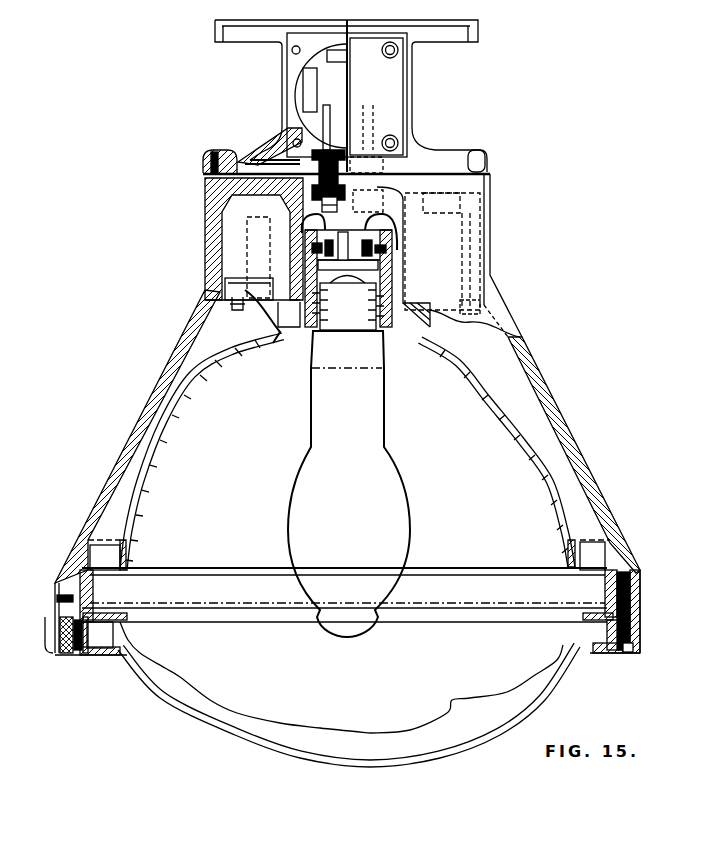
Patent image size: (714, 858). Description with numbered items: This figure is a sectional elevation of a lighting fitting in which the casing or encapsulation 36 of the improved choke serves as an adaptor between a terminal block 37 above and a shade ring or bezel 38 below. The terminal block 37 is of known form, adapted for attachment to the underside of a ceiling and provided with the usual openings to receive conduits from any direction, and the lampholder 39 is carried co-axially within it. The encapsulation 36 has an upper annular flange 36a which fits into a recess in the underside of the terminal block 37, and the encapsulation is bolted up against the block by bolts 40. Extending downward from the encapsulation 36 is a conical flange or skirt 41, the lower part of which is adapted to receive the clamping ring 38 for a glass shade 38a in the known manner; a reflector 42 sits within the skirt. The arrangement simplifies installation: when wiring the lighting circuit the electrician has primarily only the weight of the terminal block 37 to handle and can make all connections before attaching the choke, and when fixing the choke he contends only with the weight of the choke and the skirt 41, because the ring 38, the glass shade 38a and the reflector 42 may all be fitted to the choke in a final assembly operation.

The casing or encapsulation 36 is at (490, 250).
The upper annular flange 36a is at (267, 147).
The terminal block 37 is at (417, 110).
The shade ring or bezel 38 is at (640, 637).
The glass shade 38a is at (205, 697).
The lampholder 39 is at (387, 330).
The bolts 40 is at (488, 222).
The conical flange or skirt 41 is at (87, 525).
The reflector 42 is at (493, 397).